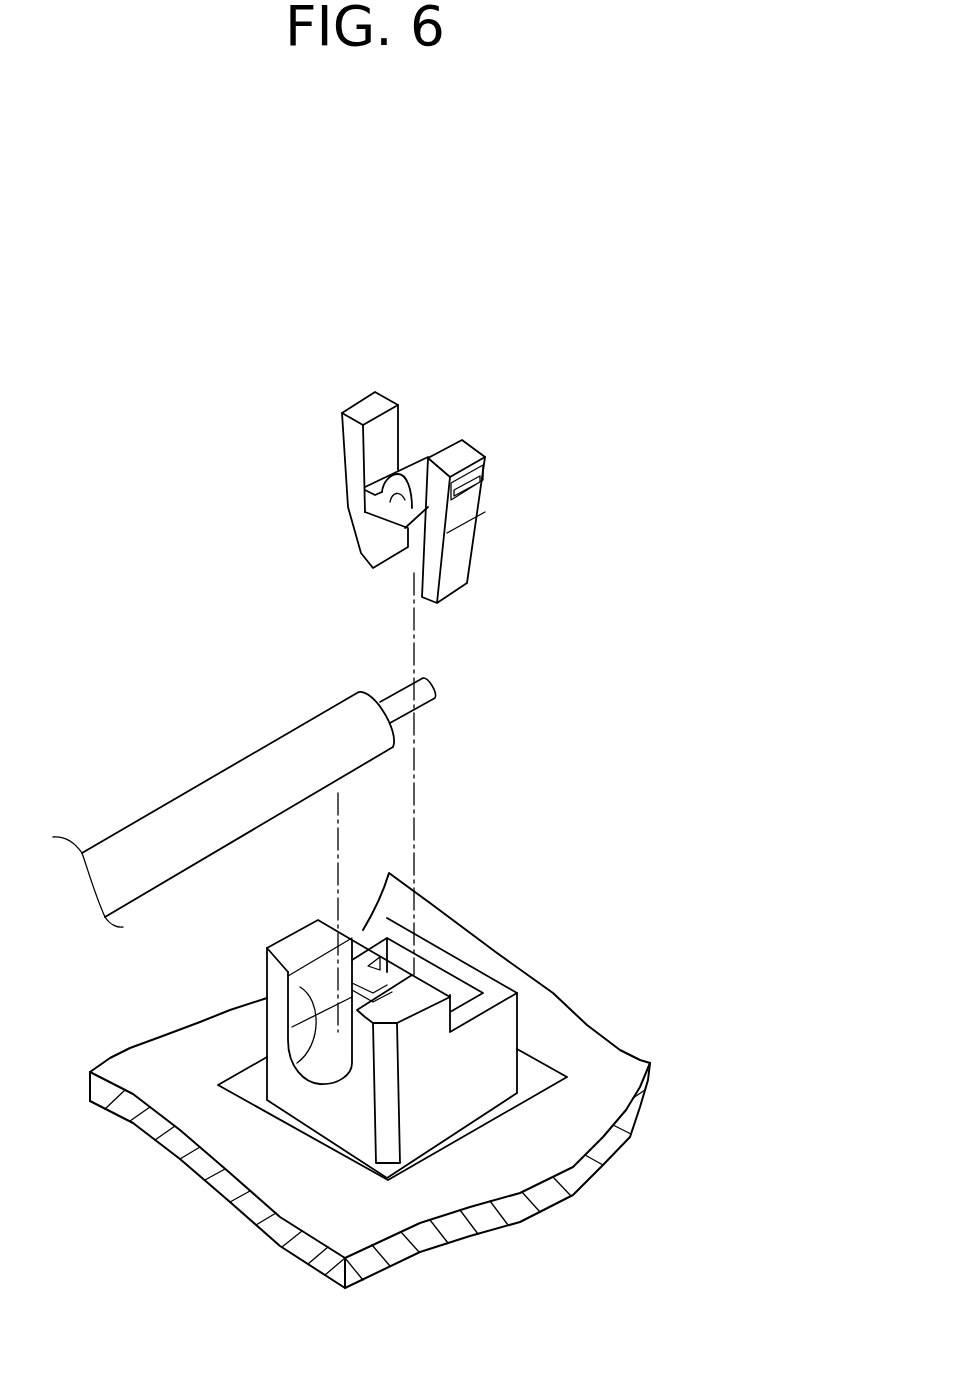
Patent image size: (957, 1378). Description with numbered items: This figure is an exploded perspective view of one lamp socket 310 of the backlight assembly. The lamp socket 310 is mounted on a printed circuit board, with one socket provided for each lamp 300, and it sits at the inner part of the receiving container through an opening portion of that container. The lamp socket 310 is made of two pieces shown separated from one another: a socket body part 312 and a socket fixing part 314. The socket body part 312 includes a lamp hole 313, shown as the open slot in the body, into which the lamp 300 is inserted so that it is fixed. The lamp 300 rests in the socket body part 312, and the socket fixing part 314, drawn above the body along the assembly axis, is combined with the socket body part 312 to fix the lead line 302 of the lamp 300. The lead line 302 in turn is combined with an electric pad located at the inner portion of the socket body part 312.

The lamp 300 is at (227, 796).
The lead line 302 is at (427, 692).
The lamp socket 310 is at (359, 1099).
The socket body part 312 is at (443, 1077).
The lamp hole 313 is at (330, 1033).
The socket fixing part 314 is at (463, 450).